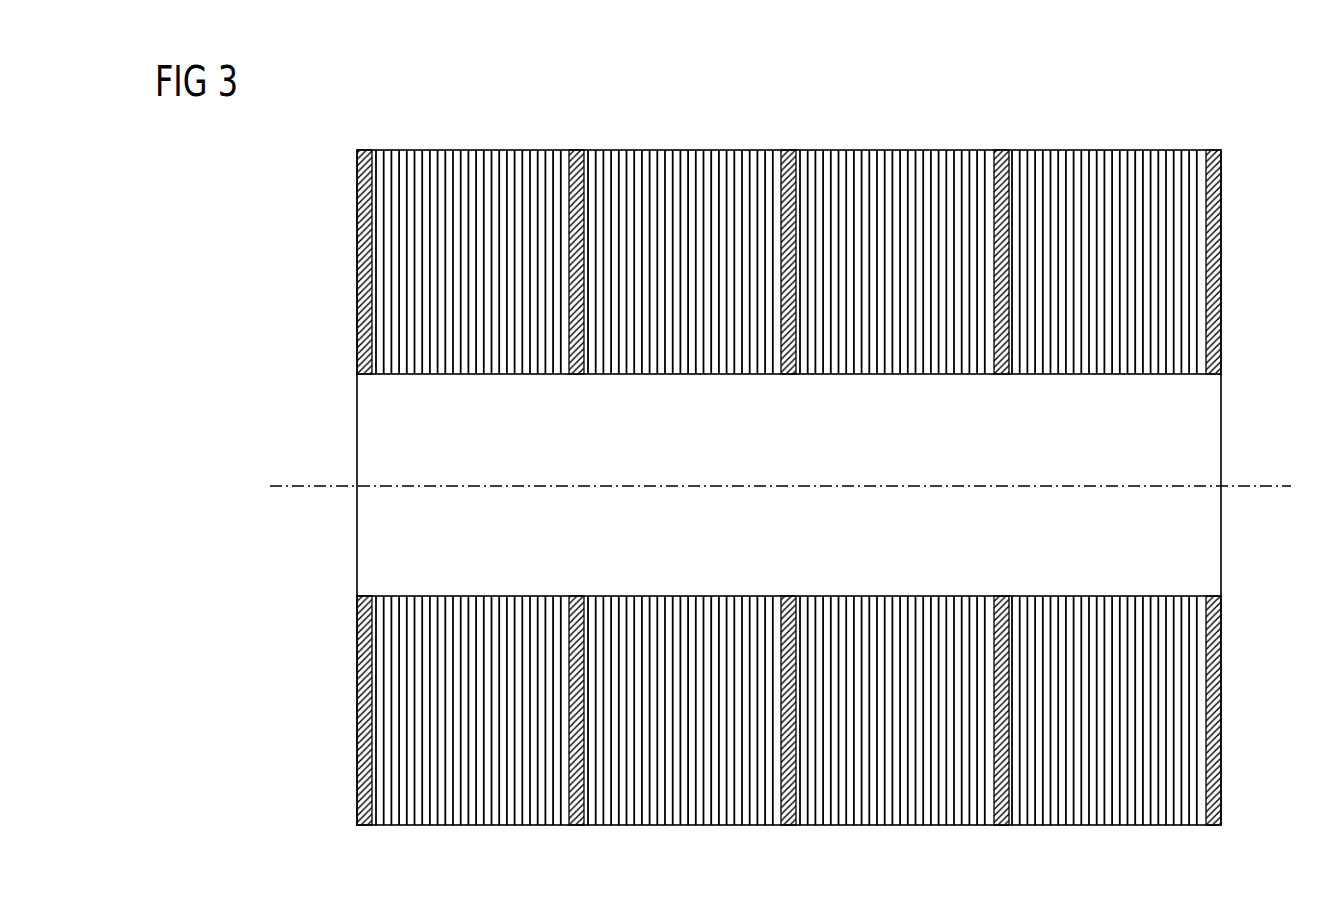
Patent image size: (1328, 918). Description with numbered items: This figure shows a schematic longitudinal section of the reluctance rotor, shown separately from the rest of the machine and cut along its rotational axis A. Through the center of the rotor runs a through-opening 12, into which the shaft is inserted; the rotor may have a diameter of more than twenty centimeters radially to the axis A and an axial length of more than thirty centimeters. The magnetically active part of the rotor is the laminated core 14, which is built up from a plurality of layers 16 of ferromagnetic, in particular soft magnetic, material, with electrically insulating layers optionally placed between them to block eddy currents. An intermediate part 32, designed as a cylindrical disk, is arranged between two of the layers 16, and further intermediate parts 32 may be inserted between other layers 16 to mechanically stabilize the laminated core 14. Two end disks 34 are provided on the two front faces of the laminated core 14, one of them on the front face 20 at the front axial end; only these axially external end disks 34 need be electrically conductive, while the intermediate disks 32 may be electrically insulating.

The through-opening 12 is at (787, 485).
The laminated core 14 is at (798, 456).
The layers 16 is at (462, 152).
The front face 20 is at (349, 202).
The intermediate part 32 is at (567, 142).
The end disks 34 is at (353, 142).
The rotational axis A is at (298, 477).